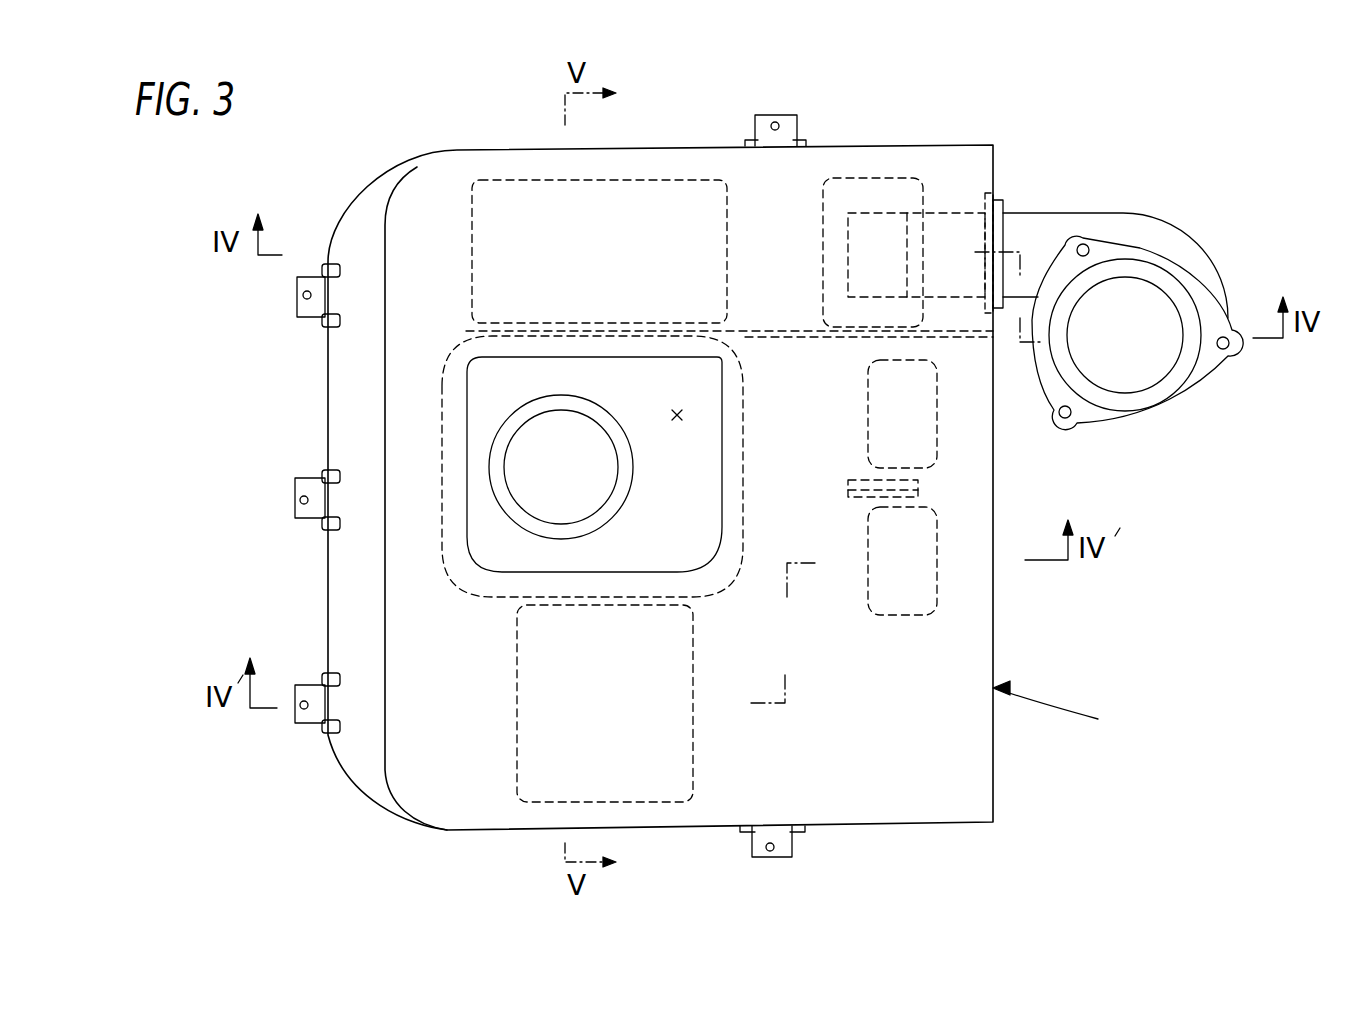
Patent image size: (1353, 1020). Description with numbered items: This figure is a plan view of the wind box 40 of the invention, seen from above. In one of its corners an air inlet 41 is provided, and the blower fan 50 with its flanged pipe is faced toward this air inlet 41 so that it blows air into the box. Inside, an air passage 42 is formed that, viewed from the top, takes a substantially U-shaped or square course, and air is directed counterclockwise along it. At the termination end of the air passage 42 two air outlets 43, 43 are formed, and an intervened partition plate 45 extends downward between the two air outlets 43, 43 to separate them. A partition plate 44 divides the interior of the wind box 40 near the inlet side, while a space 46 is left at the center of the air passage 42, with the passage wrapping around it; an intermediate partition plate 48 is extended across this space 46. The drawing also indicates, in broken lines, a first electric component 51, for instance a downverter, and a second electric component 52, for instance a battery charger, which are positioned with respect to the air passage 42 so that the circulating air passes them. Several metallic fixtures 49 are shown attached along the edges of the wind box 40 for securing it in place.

The fuel tank 40 is at (732, 487).
The air inlet 41 is at (1008, 232).
The air passage 42 is at (486, 702).
The air outlets 43 is at (917, 407).
The partition plate 44 is at (787, 326).
The intervened partition plate 45 is at (918, 487).
The space 46 is at (677, 412).
The intermediate partition plate 48 is at (531, 386).
The metallic fixture 49 is at (297, 318).
The blower fan 50 is at (1124, 325).
The first electric component 51 is at (487, 180).
The second electric component 52 is at (517, 737).